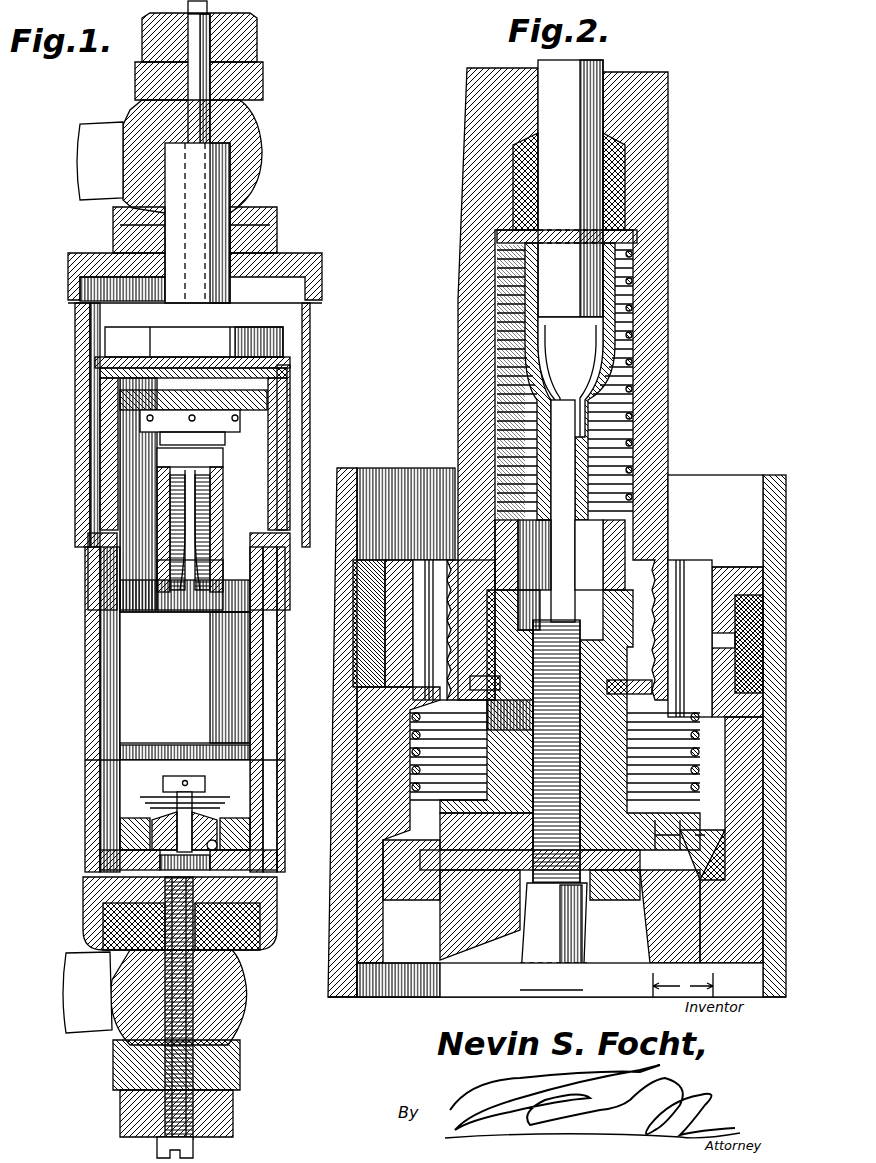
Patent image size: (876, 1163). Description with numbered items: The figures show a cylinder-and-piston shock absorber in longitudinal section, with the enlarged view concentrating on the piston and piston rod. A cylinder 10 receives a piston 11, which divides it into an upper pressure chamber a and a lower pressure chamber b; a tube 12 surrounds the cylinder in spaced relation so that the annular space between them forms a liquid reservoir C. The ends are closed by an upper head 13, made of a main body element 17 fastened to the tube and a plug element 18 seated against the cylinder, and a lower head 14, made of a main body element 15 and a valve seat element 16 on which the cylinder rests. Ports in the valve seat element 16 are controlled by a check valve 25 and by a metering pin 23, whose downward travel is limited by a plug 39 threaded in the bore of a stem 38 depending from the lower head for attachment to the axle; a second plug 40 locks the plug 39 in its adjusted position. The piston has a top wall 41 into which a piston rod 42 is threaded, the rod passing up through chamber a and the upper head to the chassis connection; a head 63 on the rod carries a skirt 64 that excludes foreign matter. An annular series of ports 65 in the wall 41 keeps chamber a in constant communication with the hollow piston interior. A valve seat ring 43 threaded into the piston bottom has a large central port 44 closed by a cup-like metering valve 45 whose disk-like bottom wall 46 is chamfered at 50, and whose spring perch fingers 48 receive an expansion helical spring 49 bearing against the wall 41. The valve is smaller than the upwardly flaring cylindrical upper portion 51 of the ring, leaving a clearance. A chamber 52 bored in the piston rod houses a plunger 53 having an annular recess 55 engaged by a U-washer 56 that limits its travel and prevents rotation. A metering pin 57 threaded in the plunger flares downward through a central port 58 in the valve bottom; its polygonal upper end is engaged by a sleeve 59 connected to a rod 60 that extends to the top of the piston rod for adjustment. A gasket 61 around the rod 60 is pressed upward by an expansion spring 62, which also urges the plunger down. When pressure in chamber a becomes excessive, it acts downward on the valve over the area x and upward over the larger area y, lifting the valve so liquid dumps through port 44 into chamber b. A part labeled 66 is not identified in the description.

In FIG. 1, the cylinder 10 is at (118, 630).
In FIG. 2, the cylinder 10 is at (745, 483).
In FIG. 1, the piston 11 is at (133, 690).
In FIG. 2, the piston 11 is at (355, 700).
In FIG. 1, the tube 12 is at (85, 768).
In FIG. 1, the upper head 13 is at (105, 348).
In FIG. 1, the lower head 14 is at (83, 905).
In FIG. 1, the main body element 15 is at (268, 933).
In FIG. 1, the valve seat element 16 is at (105, 848).
In FIG. 1, the main body element 17 is at (300, 357).
In FIG. 1, the plug element 18 is at (135, 393).
In FIG. 1, the metering pin 23 is at (195, 792).
In FIG. 1, the check valve 25 is at (210, 815).
In FIG. 1, the stem 38 is at (200, 1008).
In FIG. 1, the plug 39 is at (192, 965).
In FIG. 1, the second plug 40 is at (240, 1048).
In FIG. 2, the wall 41 is at (360, 597).
In FIG. 1, the piston rod 42 is at (220, 565).
In FIG. 2, the piston rod 42 is at (650, 320).
In FIG. 2, the valve seat ring 43 is at (400, 980).
In FIG. 2, the central port 44 is at (607, 900).
In FIG. 2, the metering valve 45 is at (470, 910).
In FIG. 2, the bottom wall 46 is at (645, 900).
In FIG. 2, the spring perch fingers 48 is at (400, 790).
In FIG. 2, the expansion helical spring 49 is at (410, 735).
In FIG. 2, the chamfer 50 is at (688, 930).
In FIG. 2, the cylindrical upper portion 51 is at (390, 858).
In FIG. 2, the chamber 52 is at (628, 405).
In FIG. 2, the plunger 53 is at (625, 538).
In FIG. 2, the annular recess 55 is at (673, 690).
In FIG. 2, the U-washer 56 is at (672, 633).
In FIG. 2, the metering pin 57 is at (550, 990).
In FIG. 2, the central port 58 is at (553, 805).
In FIG. 2, the sleeve 59 is at (528, 333).
In FIG. 1, the rod 60 is at (205, 88).
In FIG. 2, the rod 60 is at (623, 185).
In FIG. 1, the gasket 61 is at (207, 497).
In FIG. 2, the gasket 61 is at (513, 180).
In FIG. 2, the expansion helical spring 62 is at (500, 405).
In FIG. 1, the head 63 is at (275, 262).
In FIG. 1, the skirt 64 is at (300, 403).
In FIG. 2, the ports 65 is at (705, 580).
In FIG. 2, the threaded stem 66 is at (470, 585).
In FIG. 1, the upper pressure chamber a is at (135, 565).
In FIG. 2, the upper pressure chamber a is at (715, 521).
In FIG. 1, the lower pressure chamber b is at (130, 797).
In FIG. 2, the lower pressure chamber b is at (560, 980).
In FIG. 1, the liquid reservoir C is at (270, 640).
In FIG. 2, the area x is at (680, 835).
In FIG. 2, the area y is at (683, 985).